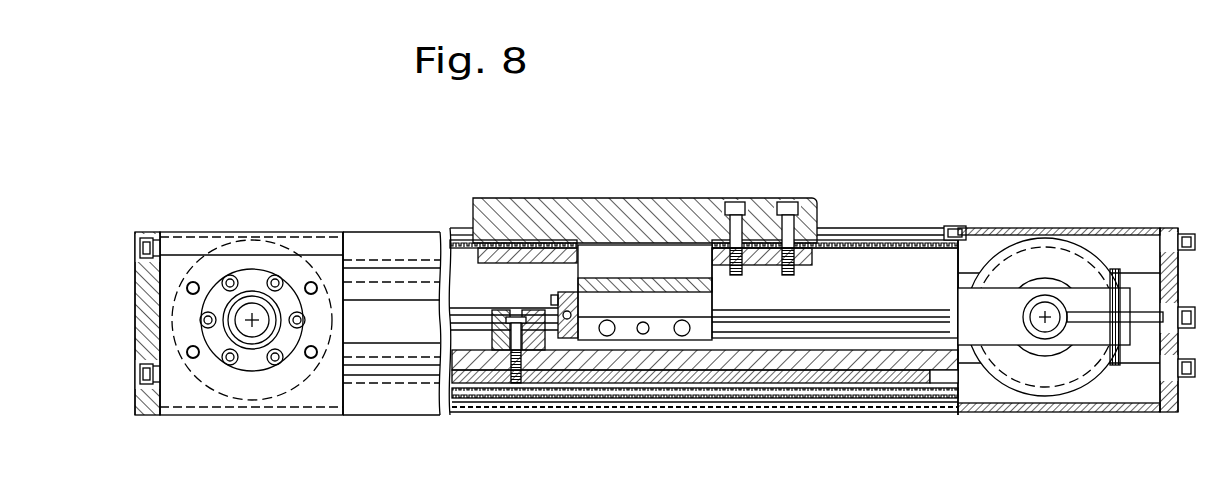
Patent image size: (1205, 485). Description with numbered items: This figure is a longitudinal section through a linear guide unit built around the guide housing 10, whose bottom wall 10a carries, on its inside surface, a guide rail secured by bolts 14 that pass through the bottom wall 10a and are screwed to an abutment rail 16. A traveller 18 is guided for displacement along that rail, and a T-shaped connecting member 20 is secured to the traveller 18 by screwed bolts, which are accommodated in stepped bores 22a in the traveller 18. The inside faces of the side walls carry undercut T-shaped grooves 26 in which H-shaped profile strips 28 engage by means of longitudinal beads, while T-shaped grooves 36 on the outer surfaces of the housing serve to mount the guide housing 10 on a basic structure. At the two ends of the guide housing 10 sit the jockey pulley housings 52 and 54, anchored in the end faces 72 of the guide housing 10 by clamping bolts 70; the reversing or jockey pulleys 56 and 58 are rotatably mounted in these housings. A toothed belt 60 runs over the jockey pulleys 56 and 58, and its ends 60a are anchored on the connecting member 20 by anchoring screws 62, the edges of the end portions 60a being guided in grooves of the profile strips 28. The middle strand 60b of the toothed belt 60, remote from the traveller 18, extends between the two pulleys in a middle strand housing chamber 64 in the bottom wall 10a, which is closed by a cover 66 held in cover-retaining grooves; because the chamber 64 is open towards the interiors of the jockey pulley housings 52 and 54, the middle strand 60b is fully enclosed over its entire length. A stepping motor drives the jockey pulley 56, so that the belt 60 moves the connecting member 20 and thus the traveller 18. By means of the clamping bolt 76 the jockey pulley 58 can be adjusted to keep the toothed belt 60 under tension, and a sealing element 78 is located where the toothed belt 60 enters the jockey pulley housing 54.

The guide housing 10 is at (424, 408).
The bottom wall 10a is at (840, 355).
The bolts 14 is at (516, 383).
The abutment rail 16 is at (648, 372).
The traveller 18 is at (700, 302).
The connecting member 20 is at (608, 200).
The stepped bores 22a is at (610, 320).
The undercut T-shaped grooves 26 is at (577, 270).
The H-shaped profile strips 28 is at (830, 255).
The T-shaped grooves 36 is at (400, 270).
The jockey pulley housing 52 is at (317, 392).
The jockey pulley housing 54 is at (1085, 412).
The jockey pulley 56 is at (226, 263).
The jockey pulley 58 is at (1060, 258).
The toothed belt 60 is at (704, 307).
The ends of the toothed belt 60a is at (547, 242).
The middle strand 60b is at (903, 395).
The anchoring screws 62 is at (735, 205).
The middle strand housing chamber 64 is at (698, 403).
The cover 66 is at (760, 405).
The clamping bolts 70 is at (312, 247).
The end faces 72 is at (346, 247).
The clamping bolt 76 is at (1143, 310).
The sealing element 78 is at (952, 226).